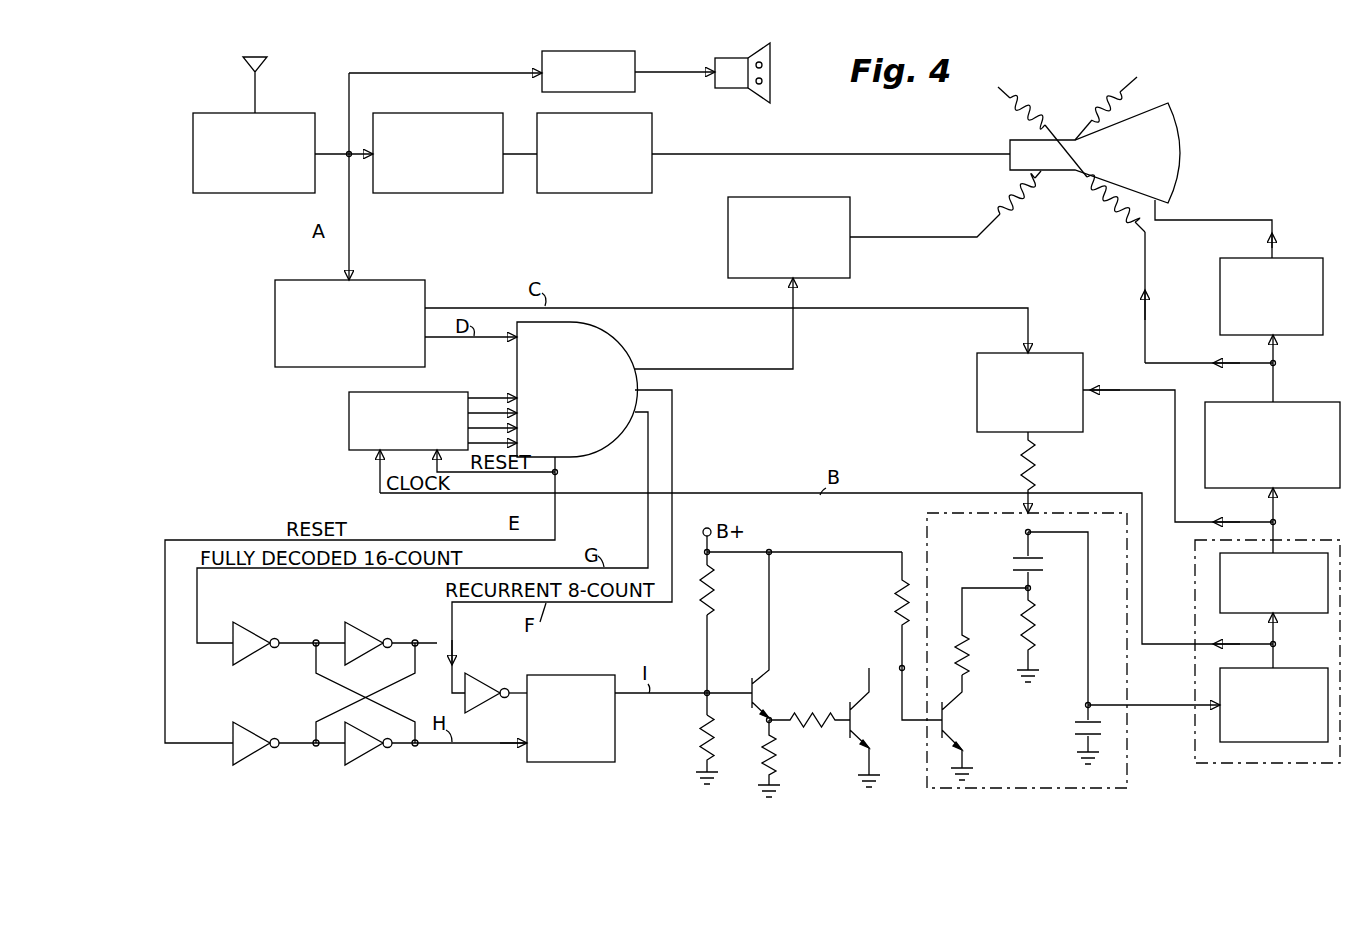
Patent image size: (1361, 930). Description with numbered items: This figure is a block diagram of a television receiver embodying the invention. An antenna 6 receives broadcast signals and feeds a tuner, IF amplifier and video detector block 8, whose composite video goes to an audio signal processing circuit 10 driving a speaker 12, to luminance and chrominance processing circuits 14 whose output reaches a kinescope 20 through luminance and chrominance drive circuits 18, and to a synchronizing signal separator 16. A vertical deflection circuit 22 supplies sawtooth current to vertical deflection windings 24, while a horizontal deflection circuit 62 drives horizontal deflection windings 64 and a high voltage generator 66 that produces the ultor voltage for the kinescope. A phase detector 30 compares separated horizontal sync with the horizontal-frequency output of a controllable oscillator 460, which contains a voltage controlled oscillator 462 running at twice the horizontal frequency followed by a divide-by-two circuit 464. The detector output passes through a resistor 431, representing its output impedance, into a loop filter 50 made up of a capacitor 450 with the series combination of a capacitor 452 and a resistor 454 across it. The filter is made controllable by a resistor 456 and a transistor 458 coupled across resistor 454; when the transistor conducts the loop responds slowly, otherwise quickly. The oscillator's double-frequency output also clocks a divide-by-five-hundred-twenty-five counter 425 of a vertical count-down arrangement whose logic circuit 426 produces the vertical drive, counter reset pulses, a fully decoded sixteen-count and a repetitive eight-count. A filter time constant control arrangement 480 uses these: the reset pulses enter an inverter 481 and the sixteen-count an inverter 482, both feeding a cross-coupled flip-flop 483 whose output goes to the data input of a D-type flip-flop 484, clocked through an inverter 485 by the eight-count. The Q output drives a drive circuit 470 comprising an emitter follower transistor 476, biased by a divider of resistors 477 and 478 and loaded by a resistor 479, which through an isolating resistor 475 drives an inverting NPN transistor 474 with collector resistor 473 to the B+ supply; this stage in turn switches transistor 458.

The antenna 6 is at (262, 66).
The tuner, IF amplifier and video detector 8 is at (235, 196).
The audio signal processing circuit 10 is at (542, 56).
The speaker 12 is at (772, 60).
The luminance and chrominance processing circuits 14 is at (440, 113).
The synchronizing signal separator 16 is at (378, 280).
The luminance and chrominance drive circuits 18 is at (652, 132).
The kinescope 20 is at (1185, 126).
The vertical deflection circuit 22 is at (820, 197).
The vertical deflection windings 24 is at (1100, 90).
The phase detector 30 is at (977, 378).
The loop filter 50 is at (1127, 782).
The horizontal deflection circuit 62 is at (1292, 402).
The horizontal deflection windings 64 is at (1022, 78).
The high voltage generator 66 is at (1220, 280).
The divide-by-525 counter 425 is at (349, 410).
The logic circuit 426 is at (630, 342).
The resistor 431 is at (1040, 465).
The capacitor 450 is at (1075, 718).
The capacitor 452 is at (1013, 556).
The resistor 454 is at (1038, 634).
The resistor 456 is at (970, 658).
The transistor 458 is at (950, 720).
The controllable oscillator 460 is at (1305, 770).
The voltage controlled oscillator 462 is at (1280, 668).
The divide-by-two circuit 464 is at (1290, 553).
The drive circuit 470 is at (815, 637).
The resistor 473 is at (893, 606).
The NPN transistor 474 is at (855, 715).
The isolating resistor 475 is at (810, 712).
The NPN transistor 476 is at (746, 686).
The resistor 477 is at (712, 606).
The resistor 478 is at (698, 737).
The resistor 479 is at (778, 762).
The filter time constant control arrangement 480 is at (376, 673).
The inverter 481 is at (256, 732).
The inverter 482 is at (255, 628).
The cross-coupled flip-flop 483 is at (366, 629).
The D-type flip-flop 484 is at (580, 768).
The inverter 485 is at (480, 680).